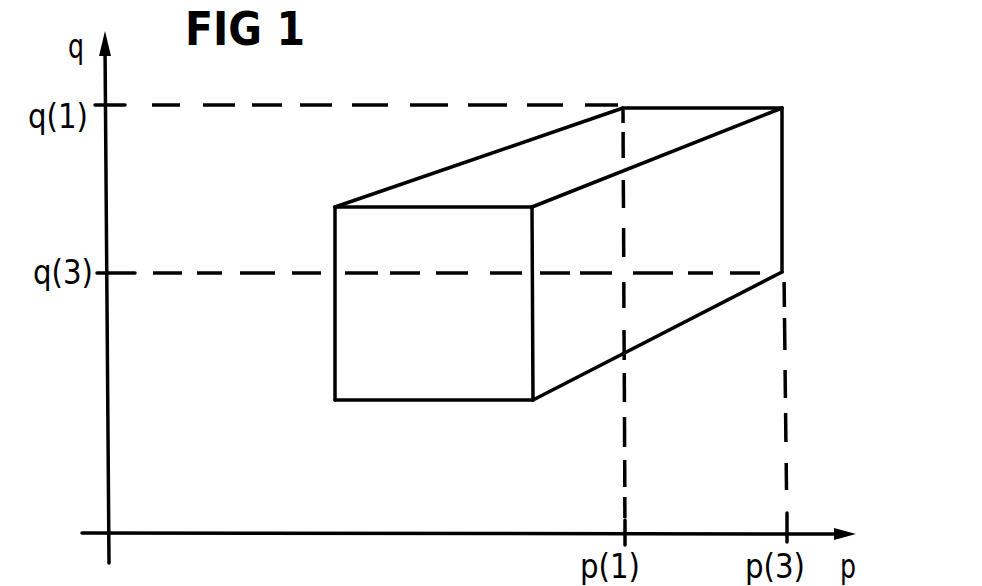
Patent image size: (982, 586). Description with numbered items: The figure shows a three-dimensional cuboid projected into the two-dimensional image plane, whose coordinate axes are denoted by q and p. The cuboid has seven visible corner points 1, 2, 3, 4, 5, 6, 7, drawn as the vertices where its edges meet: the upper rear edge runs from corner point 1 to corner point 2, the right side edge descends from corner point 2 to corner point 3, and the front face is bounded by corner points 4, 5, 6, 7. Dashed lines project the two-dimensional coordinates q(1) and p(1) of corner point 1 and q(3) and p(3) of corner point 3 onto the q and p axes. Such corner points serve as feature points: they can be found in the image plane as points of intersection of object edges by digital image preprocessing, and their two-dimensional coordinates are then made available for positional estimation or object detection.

The corner point 1 is at (697, 80).
The corner point 2 is at (790, 164).
The corner point 3 is at (672, 316).
The corner point 4 is at (649, 254).
The corner point 5 is at (469, 159).
The corner point 6 is at (327, 332).
The corner point 7 is at (439, 429).